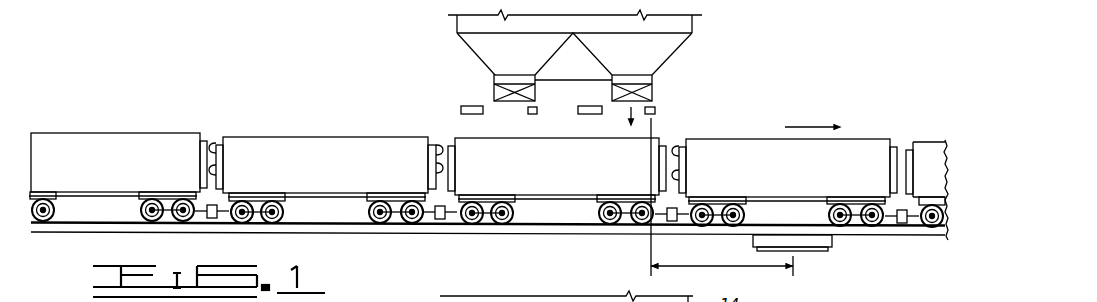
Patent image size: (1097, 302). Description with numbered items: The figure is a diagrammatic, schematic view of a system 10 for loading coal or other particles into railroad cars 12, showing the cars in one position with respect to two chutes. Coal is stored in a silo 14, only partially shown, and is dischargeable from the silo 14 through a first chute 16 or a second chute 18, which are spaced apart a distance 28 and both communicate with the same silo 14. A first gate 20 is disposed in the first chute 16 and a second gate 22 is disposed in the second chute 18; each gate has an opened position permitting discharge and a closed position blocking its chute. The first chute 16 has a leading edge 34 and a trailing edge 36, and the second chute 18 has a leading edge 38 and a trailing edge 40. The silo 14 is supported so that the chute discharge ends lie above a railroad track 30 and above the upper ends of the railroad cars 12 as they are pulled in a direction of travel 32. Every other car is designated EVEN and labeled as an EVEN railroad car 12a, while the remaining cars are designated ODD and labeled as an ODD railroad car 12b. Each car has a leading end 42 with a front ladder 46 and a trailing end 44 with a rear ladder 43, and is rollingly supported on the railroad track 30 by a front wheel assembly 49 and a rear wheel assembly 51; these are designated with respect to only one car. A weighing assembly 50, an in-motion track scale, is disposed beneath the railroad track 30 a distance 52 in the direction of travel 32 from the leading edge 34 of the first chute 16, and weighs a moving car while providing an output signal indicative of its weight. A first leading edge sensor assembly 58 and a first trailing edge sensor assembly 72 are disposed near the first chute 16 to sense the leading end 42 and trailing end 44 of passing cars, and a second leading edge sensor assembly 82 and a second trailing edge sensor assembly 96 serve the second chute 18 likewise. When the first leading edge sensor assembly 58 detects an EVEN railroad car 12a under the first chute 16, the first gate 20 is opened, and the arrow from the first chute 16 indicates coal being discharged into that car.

The system 10 is at (489, 176).
The railroad car 12 is at (157, 128).
The EVEN railroad car 12a is at (925, 148).
The ODD railroad car 12b is at (556, 181).
The silo 14 is at (680, 25).
The first chute 16 is at (648, 78).
The second chute 18 is at (495, 75).
The first gate 20 is at (647, 95).
The second gate 22 is at (494, 93).
The distance 28 is at (574, 80).
The railroad track 30 is at (393, 234).
The direction of travel 32 is at (808, 126).
The leading edge 34 is at (654, 79).
The trailing edge 36 is at (597, 80).
The leading edge 38 is at (540, 80).
The trailing edge 40 is at (494, 80).
The leading end 42 is at (438, 148).
The rear ladder 43 is at (219, 174).
The trailing end 44 is at (216, 145).
The front ladder 46 is at (438, 166).
The front wheel assembly 49 is at (412, 226).
The weighing assembly 50 is at (808, 240).
The rear wheel assembly 51 is at (238, 220).
The distance 52 is at (722, 273).
The first leading edge sensor assembly 58 is at (656, 110).
The first trailing edge sensor assembly 72 is at (588, 114).
The second leading edge sensor assembly 82 is at (527, 114).
The second trailing edge sensor assembly 96 is at (462, 106).